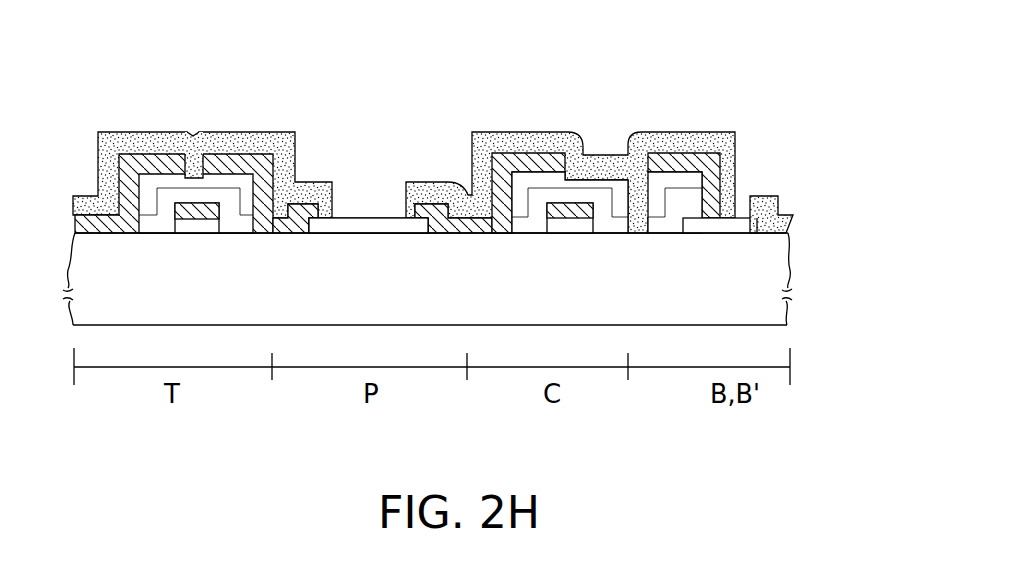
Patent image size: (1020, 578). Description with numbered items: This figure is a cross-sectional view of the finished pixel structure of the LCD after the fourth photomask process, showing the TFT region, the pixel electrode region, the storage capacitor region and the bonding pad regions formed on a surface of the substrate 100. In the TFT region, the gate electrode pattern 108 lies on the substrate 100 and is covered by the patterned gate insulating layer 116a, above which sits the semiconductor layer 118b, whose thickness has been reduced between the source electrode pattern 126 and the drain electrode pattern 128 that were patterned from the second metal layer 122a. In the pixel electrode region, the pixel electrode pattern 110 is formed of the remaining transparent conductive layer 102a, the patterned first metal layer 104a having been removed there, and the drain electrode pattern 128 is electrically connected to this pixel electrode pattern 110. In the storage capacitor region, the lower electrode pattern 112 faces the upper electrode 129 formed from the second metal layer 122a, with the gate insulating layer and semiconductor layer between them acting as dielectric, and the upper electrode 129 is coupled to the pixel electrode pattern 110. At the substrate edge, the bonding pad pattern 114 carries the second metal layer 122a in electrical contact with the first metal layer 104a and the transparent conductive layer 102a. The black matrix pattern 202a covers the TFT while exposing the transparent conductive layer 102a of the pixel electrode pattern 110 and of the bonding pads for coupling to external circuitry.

The substrate 100 is at (757, 311).
The patterned transparent conductive layer 102a is at (373, 228).
The patterned first metal layer 104a is at (705, 222).
The gate electrode pattern 108 is at (212, 193).
The pixel electrode pattern 110 is at (373, 203).
The lower electrode pattern 112 is at (565, 191).
The bonding pad pattern 114 is at (732, 209).
The patterned gate insulating layer 116a is at (228, 233).
The semiconductor layer 118b is at (620, 190).
The patterned second metal layer 122a is at (502, 165).
The source electrode pattern 126 is at (136, 140).
The drain electrode pattern 128 is at (218, 138).
The upper electrode 129 is at (538, 141).
The black matrix pattern 202a is at (172, 138).